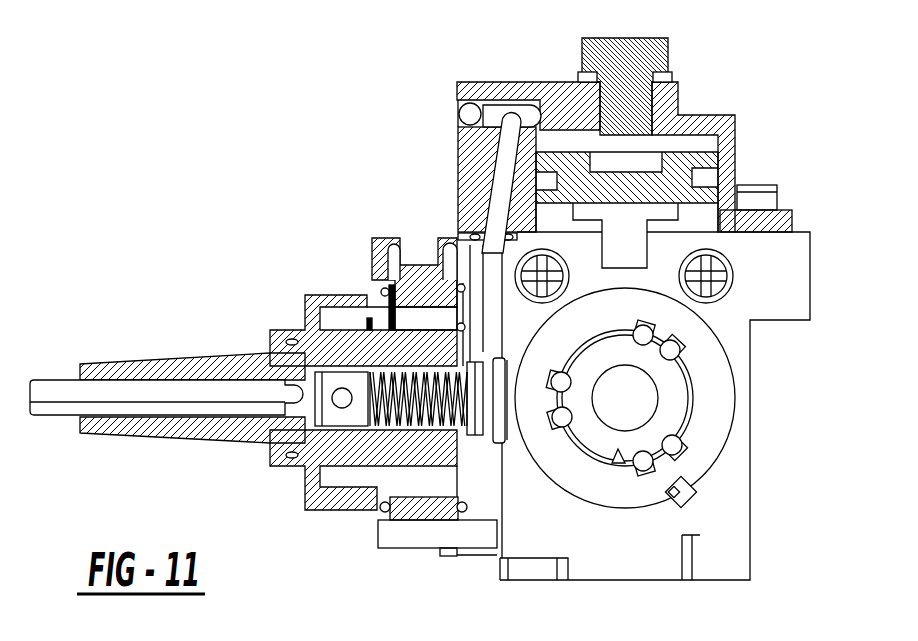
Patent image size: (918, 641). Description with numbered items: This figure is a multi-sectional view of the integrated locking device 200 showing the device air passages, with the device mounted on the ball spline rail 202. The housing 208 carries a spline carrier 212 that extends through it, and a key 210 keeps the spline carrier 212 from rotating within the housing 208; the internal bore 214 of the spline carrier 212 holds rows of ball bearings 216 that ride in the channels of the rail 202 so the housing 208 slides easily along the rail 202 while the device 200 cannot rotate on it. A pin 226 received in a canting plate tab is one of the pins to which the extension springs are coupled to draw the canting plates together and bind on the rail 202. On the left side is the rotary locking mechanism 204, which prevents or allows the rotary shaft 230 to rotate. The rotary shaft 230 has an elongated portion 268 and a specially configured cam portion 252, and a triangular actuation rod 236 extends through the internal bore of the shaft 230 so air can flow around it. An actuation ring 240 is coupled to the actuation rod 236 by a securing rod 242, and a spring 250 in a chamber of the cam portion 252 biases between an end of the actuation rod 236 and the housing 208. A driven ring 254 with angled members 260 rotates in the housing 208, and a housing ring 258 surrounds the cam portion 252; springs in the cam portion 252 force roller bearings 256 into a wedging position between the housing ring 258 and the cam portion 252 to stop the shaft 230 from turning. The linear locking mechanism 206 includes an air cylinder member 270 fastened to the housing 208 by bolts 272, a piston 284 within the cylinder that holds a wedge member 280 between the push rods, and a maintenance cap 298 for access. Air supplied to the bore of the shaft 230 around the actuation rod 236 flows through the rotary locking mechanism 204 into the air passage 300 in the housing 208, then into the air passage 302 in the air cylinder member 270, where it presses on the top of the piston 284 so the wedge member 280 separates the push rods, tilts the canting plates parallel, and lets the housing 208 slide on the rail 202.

The integrated locking device 200 is at (258, 177).
The ball spline rail 202 is at (663, 403).
The rotary locking mechanism 204 is at (258, 477).
The linear locking mechanism 206 is at (770, 111).
The housing 208 is at (741, 442).
The key 210 is at (685, 495).
The spline carrier 212 is at (710, 377).
The internal bore 214 is at (616, 458).
The ball bearings 216 is at (567, 413).
The pin 226 is at (709, 280).
The rotary shaft 230 is at (172, 352).
The actuation rod 236 is at (62, 392).
The actuation ring 240 is at (342, 313).
The securing rod 242 is at (342, 403).
The spring 250 is at (394, 425).
The cam portion 252 is at (412, 453).
The driven ring 254 is at (455, 312).
The roller bearings 256 is at (410, 313).
The housing ring 258 is at (423, 272).
The angled members 260 is at (445, 485).
The elongated portion 268 is at (227, 363).
The air cylinder member 270 is at (697, 118).
The bolts 272 is at (767, 200).
The wedge member 280 is at (627, 242).
The piston 284 is at (678, 163).
The maintenance cap 298 is at (633, 48).
The air passage 300 is at (497, 333).
The air passage 302 is at (502, 175).